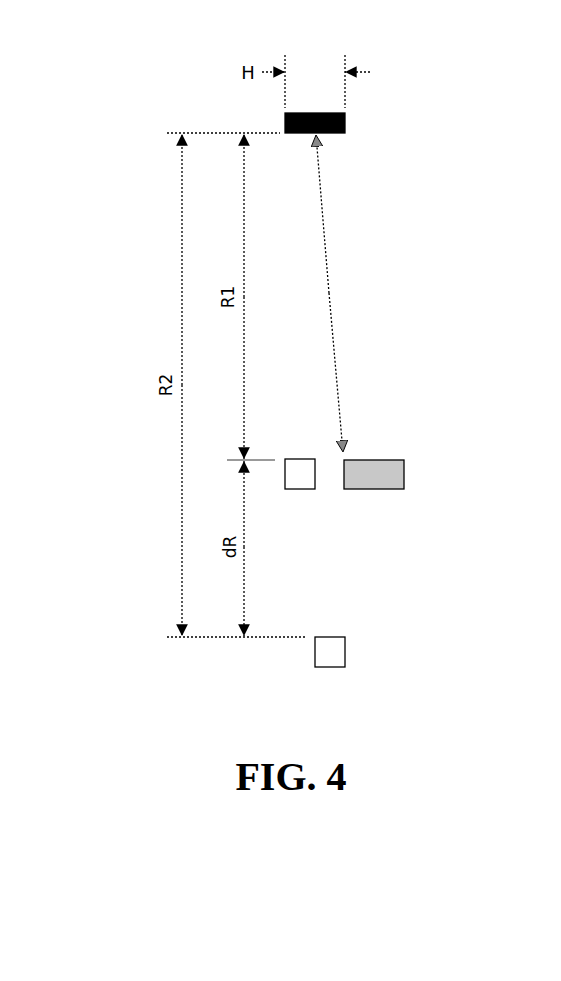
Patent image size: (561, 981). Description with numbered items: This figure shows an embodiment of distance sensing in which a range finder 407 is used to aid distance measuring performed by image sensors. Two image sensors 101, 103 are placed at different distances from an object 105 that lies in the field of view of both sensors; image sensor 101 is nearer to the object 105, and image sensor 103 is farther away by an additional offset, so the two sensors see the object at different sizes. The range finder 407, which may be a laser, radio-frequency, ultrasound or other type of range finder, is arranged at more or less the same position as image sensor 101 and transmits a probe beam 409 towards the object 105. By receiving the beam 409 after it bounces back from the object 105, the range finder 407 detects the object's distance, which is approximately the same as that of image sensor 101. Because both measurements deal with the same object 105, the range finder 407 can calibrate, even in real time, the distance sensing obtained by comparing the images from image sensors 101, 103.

The object 105 is at (285, 113).
The probe beam 409 is at (333, 303).
The range finder 407 is at (404, 460).
The image sensor 101 is at (315, 489).
The image sensor 103 is at (345, 637).